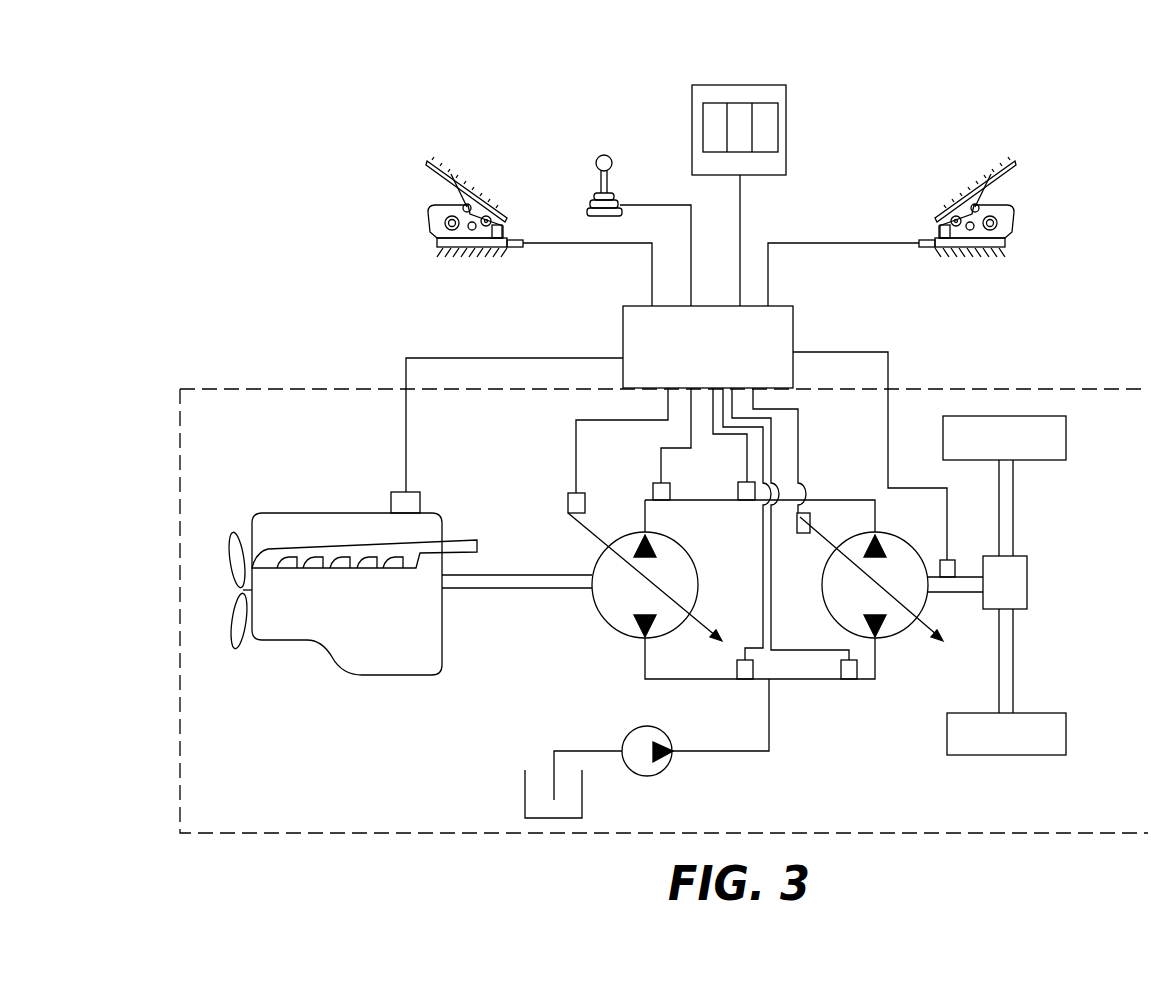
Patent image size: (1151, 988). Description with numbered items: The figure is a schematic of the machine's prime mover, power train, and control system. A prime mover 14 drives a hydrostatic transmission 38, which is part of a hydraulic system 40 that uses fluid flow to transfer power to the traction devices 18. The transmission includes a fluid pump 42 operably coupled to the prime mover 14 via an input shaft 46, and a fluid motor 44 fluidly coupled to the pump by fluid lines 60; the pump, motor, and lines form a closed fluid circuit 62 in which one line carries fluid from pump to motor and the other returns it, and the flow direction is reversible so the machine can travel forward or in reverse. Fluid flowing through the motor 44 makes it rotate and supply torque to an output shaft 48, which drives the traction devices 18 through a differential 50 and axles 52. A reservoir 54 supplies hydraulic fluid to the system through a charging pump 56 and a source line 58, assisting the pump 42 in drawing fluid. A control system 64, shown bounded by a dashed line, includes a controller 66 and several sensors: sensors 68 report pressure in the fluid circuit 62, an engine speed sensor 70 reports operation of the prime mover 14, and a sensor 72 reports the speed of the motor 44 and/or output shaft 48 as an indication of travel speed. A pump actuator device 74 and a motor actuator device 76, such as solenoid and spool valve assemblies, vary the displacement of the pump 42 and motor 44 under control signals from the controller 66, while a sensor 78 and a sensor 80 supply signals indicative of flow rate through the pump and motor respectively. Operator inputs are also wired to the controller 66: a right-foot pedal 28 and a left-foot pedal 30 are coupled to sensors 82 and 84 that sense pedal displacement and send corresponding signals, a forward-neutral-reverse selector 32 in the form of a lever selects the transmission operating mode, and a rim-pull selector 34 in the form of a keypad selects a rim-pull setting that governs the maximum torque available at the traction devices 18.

The prime mover 14 is at (349, 650).
The traction devices 18 is at (1066, 432).
The right-foot pedal 28 is at (992, 178).
The left-foot pedal 30 is at (436, 170).
The forward-neutral-reverse selector 32 is at (601, 155).
The rim-pull selector 34 is at (757, 88).
The hydrostatic transmission 38 is at (592, 622).
The hydraulic system 40 is at (791, 762).
The fluid pump 42 is at (698, 555).
The fluid motor 44 is at (900, 536).
The input shaft 46 is at (522, 586).
The output shaft 48 is at (968, 592).
The differential 50 is at (1015, 592).
The axles 52 is at (1013, 525).
The reservoir 54 is at (582, 808).
The charging pump 56 is at (665, 768).
The source line 58 is at (770, 722).
The fluid lines 60 is at (712, 498).
The closed fluid circuit 62 is at (642, 660).
The control system 64 is at (930, 380).
The controller 66 is at (793, 308).
The pressure sensors 68 is at (745, 498).
The engine speed sensor 70 is at (410, 504).
The speed sensor 72 is at (955, 556).
The pump actuator device 74 is at (585, 502).
The motor actuator device 76 is at (810, 518).
The pump flow sensor 78 is at (655, 486).
The motor flow sensor 80 is at (850, 672).
The pedal displacement sensor 82 is at (923, 248).
The pedal displacement sensor 84 is at (520, 248).